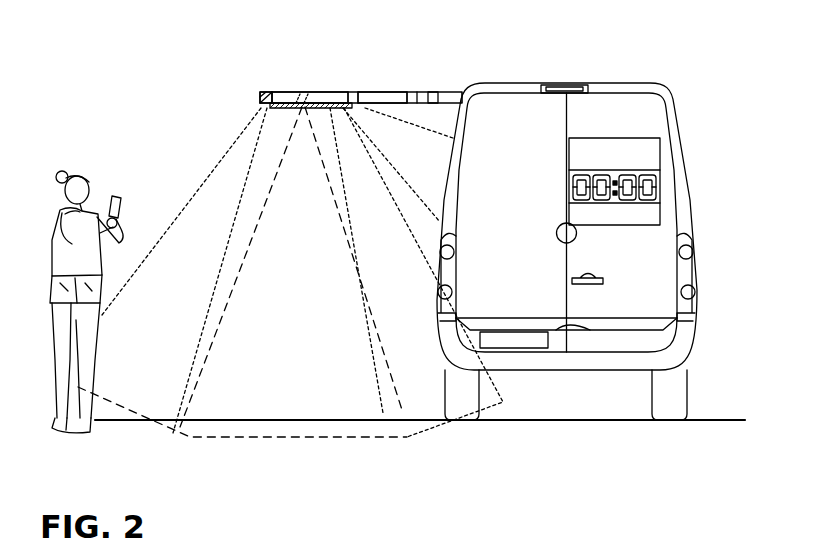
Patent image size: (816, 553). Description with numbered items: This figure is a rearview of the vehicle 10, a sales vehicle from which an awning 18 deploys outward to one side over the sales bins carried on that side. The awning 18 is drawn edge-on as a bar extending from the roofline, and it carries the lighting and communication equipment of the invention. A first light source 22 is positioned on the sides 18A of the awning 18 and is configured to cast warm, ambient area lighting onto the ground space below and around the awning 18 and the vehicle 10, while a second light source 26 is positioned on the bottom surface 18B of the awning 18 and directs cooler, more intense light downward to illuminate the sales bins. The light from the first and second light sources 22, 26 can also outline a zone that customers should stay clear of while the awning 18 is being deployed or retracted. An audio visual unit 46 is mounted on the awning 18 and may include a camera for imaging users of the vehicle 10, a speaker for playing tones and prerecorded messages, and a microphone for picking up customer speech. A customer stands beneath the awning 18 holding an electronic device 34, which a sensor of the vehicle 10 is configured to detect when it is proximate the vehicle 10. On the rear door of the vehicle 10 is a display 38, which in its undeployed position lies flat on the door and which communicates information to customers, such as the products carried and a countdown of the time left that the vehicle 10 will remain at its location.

The vehicle 10 is at (634, 66).
The awning 18 is at (370, 90).
The sides of the awning 18A is at (358, 95).
The bottom surface of the awning 18B is at (392, 108).
The first light source 22 is at (260, 96).
The second light source 26 is at (297, 108).
The electronic device 34 is at (118, 193).
The display 38 is at (632, 138).
The audio visual unit 46 is at (435, 95).